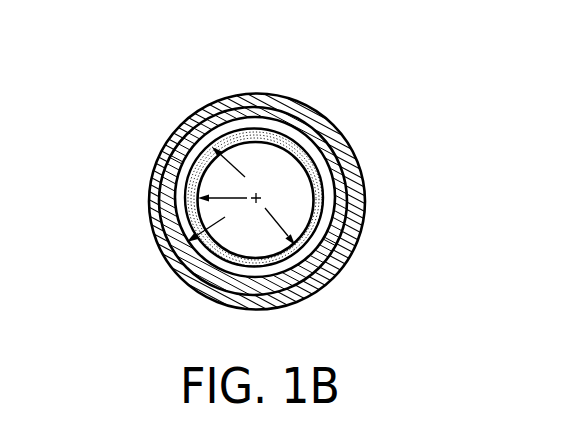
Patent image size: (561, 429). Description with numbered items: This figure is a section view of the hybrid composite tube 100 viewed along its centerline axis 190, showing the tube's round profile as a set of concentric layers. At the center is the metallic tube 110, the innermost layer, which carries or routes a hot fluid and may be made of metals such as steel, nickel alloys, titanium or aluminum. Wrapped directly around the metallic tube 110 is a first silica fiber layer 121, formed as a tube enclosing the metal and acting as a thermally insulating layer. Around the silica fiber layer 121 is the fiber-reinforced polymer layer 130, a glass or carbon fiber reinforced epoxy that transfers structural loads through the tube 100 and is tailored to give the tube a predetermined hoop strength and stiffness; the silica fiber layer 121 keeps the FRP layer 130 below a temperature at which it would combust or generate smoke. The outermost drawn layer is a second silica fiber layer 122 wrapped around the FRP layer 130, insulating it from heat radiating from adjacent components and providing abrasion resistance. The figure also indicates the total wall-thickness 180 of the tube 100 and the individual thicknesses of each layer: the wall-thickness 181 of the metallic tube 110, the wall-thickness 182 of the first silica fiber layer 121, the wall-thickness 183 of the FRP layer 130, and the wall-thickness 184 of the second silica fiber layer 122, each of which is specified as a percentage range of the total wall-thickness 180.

The hybrid composite tube 100 is at (366, 83).
The metallic tube 110 is at (320, 197).
The silica fiber layer 121 is at (222, 130).
The silica fiber layer 122 is at (242, 98).
The fiber-reinforced polymer layer 130 is at (285, 117).
The total wall-thickness 180 is at (254, 197).
The wall-thickness of metallic inner layer 181 is at (168, 198).
The wall-thickness of first silica fiber layer 182 is at (193, 129).
The wall-thickness of FRP layer 183 is at (159, 253).
The wall-thickness of second silica fiber layer 184 is at (148, 148).
The centerline axis 190 is at (255, 203).